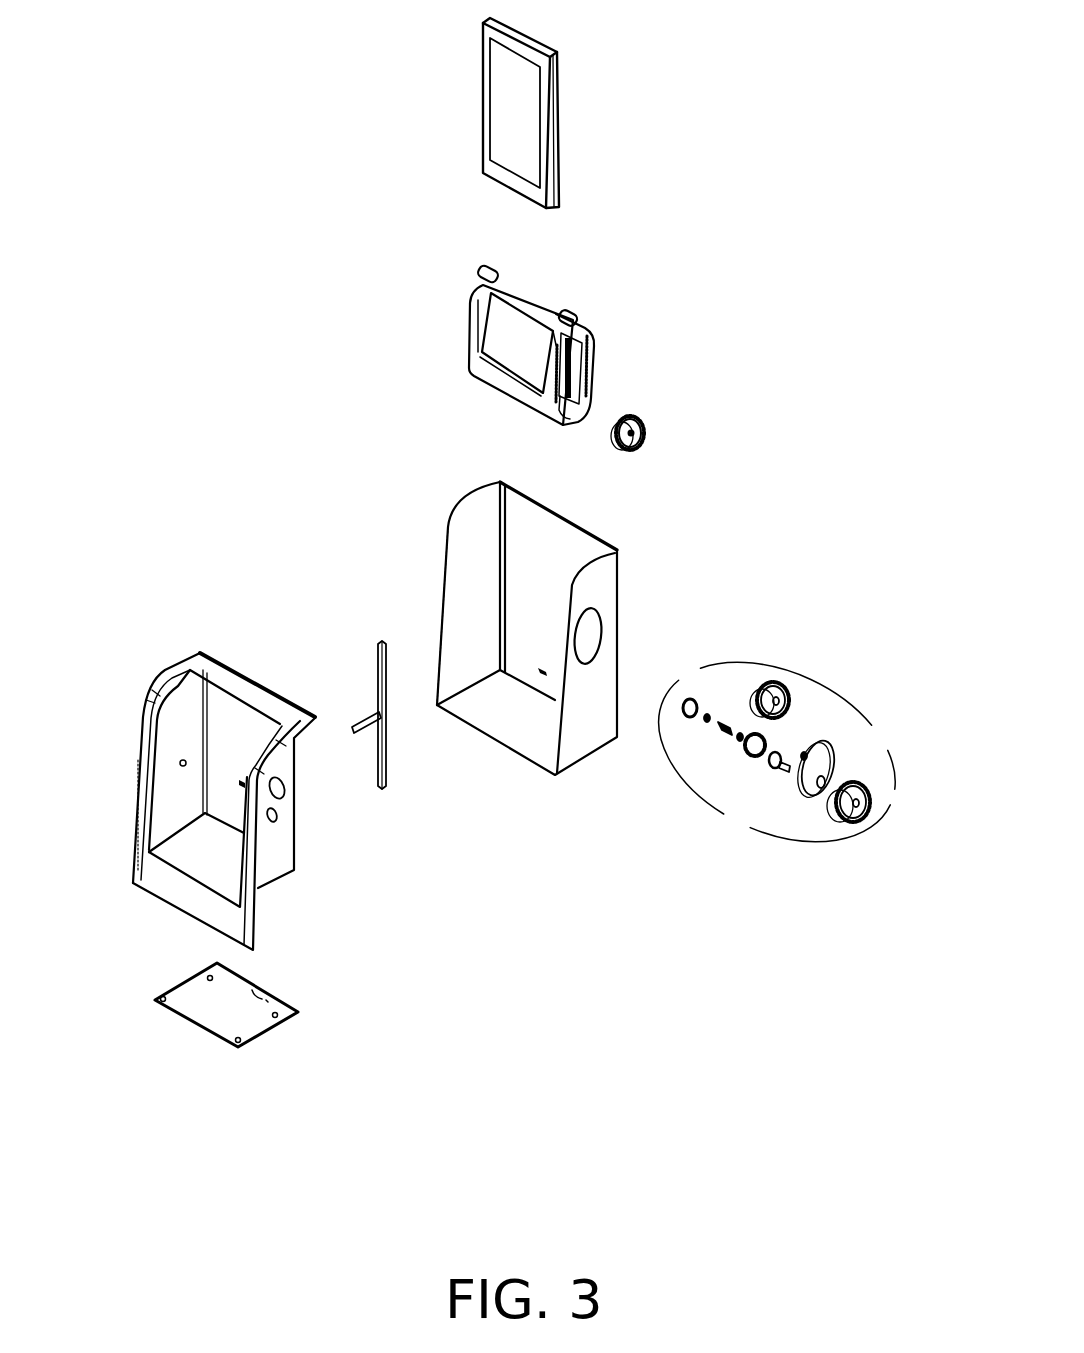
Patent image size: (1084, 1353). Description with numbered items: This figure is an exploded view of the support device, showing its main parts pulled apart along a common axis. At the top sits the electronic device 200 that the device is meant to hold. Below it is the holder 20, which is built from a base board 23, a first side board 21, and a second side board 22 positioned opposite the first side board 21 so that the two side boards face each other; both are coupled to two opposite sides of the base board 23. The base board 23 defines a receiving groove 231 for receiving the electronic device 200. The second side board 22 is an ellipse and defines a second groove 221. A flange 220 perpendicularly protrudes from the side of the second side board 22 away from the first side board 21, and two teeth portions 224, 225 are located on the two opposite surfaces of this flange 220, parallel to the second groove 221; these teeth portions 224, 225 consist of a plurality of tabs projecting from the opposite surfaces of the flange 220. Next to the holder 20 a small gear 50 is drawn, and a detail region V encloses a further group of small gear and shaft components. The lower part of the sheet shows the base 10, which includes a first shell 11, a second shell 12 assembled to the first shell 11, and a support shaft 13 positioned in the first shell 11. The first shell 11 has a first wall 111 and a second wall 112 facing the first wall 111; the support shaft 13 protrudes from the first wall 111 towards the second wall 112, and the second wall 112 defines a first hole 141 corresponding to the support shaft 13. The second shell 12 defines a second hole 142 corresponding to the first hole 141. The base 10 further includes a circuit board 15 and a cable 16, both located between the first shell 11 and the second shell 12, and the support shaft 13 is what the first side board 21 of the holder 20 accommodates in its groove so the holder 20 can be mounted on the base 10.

The electronic device 200 is at (525, 43).
The holder 20 is at (430, 337).
The first side board 21 is at (473, 293).
The second side board 22 is at (578, 340).
The base board 23 is at (488, 365).
The flange 220 is at (555, 340).
The second groove 221 is at (575, 407).
The teeth portion 224 is at (557, 377).
The teeth portion 225 is at (590, 367).
The receiving groove 231 is at (518, 358).
The gear 50 is at (642, 435).
The base 10 is at (508, 807).
The first shell 11 is at (282, 843).
The first wall 111 is at (175, 707).
The second wall 112 is at (280, 752).
The support shaft 13 is at (180, 762).
The first hole 141 is at (278, 783).
The second shell 12 is at (505, 733).
The second hole 142 is at (590, 630).
The cable 16 is at (380, 660).
The circuit board 15 is at (190, 992).
The detail view V is at (820, 690).